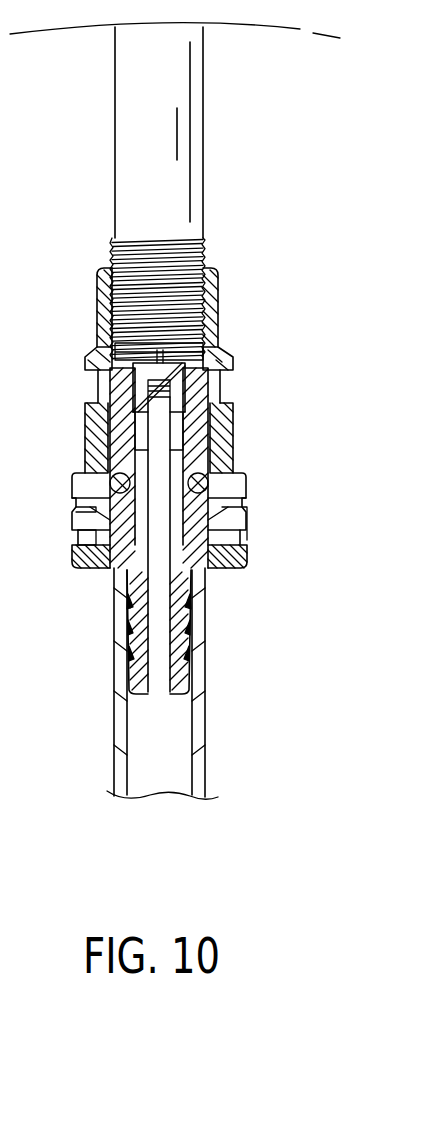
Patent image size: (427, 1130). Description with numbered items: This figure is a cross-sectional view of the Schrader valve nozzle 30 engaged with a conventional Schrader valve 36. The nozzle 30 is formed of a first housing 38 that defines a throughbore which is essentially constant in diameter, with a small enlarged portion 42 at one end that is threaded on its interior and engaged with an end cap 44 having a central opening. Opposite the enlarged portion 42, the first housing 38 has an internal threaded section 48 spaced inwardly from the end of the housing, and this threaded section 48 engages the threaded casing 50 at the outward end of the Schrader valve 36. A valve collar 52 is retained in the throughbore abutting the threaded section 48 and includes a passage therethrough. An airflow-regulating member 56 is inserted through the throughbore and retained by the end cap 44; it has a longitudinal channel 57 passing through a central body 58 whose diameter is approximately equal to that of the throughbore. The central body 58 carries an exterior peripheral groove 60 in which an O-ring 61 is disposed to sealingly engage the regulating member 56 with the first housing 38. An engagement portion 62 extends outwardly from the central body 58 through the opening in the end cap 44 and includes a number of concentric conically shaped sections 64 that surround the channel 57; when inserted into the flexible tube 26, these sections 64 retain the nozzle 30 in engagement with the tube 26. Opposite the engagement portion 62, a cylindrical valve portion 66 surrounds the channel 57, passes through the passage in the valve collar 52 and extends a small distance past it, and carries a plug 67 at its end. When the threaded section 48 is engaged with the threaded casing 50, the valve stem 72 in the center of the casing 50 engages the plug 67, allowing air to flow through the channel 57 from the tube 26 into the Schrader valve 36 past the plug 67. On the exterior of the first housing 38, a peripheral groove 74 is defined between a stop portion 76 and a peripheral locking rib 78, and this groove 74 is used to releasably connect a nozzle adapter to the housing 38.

The flexible tube 26 is at (113, 680).
The Schrader valve nozzle 30 is at (262, 518).
The Schrader valve 36 is at (213, 139).
The first housing 38 is at (226, 318).
The enlarged portion 42 is at (237, 540).
The end cap 44 is at (227, 572).
The internal threaded section 48 is at (100, 312).
The threaded casing 50 is at (204, 245).
The valve collar 52 is at (210, 408).
The airflow-regulating member 56 is at (115, 530).
The longitudinal channel 57 is at (165, 602).
The central body 58 is at (115, 511).
The exterior peripheral groove 60 is at (105, 442).
The O-ring 61 is at (109, 483).
The engagement portion 62 is at (130, 625).
The conically shaped sections 64 is at (195, 658).
The cylindrical valve portion 66 is at (110, 413).
The plug 67 is at (132, 373).
The valve stem 72 is at (97, 357).
The peripheral groove 74 is at (218, 385).
The stop portion 76 is at (222, 400).
The peripheral locking rib 78 is at (232, 358).